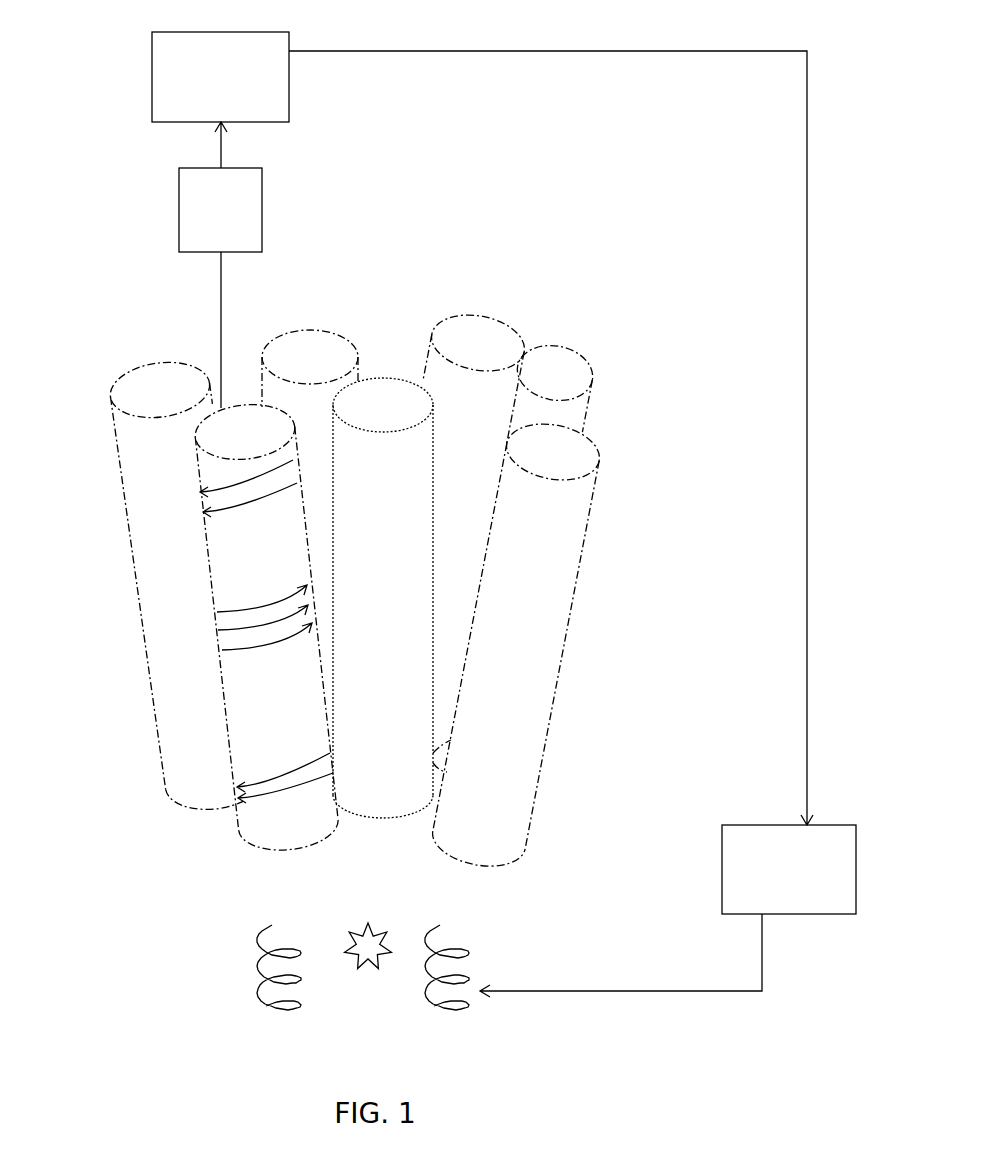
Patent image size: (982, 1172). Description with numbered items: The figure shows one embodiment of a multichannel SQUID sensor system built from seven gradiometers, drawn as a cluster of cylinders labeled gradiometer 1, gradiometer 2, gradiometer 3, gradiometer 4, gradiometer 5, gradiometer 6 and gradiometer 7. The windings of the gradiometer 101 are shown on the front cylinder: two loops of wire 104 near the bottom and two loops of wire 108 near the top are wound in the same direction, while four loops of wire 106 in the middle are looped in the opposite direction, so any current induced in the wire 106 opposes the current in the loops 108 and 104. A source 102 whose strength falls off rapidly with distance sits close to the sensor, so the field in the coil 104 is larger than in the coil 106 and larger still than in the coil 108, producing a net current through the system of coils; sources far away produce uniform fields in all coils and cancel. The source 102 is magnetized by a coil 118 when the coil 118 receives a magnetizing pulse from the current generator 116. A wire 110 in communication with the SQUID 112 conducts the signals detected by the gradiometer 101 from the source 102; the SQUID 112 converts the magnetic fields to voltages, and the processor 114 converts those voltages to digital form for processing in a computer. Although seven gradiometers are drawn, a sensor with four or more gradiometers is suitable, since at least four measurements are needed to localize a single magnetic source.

The gradiometer 1 is at (188, 585).
The gradiometer 2 is at (310, 368).
The gradiometer 3 is at (471, 530).
The gradiometer 4 is at (515, 555).
The gradiometer 5 is at (266, 627).
The gradiometer 6 is at (383, 598).
The gradiometer 7 is at (516, 645).
The gradiometer 101 is at (181, 642).
The source 102 is at (368, 960).
The loops of wire 104 is at (237, 806).
The loops of wire 106 is at (216, 632).
The loops of wire 108 is at (188, 498).
The wire 110 is at (207, 311).
The SQUID 112 is at (220, 187).
The processor 114 is at (220, 77).
The current generator 116 is at (572, 524).
The coil 118 is at (252, 968).